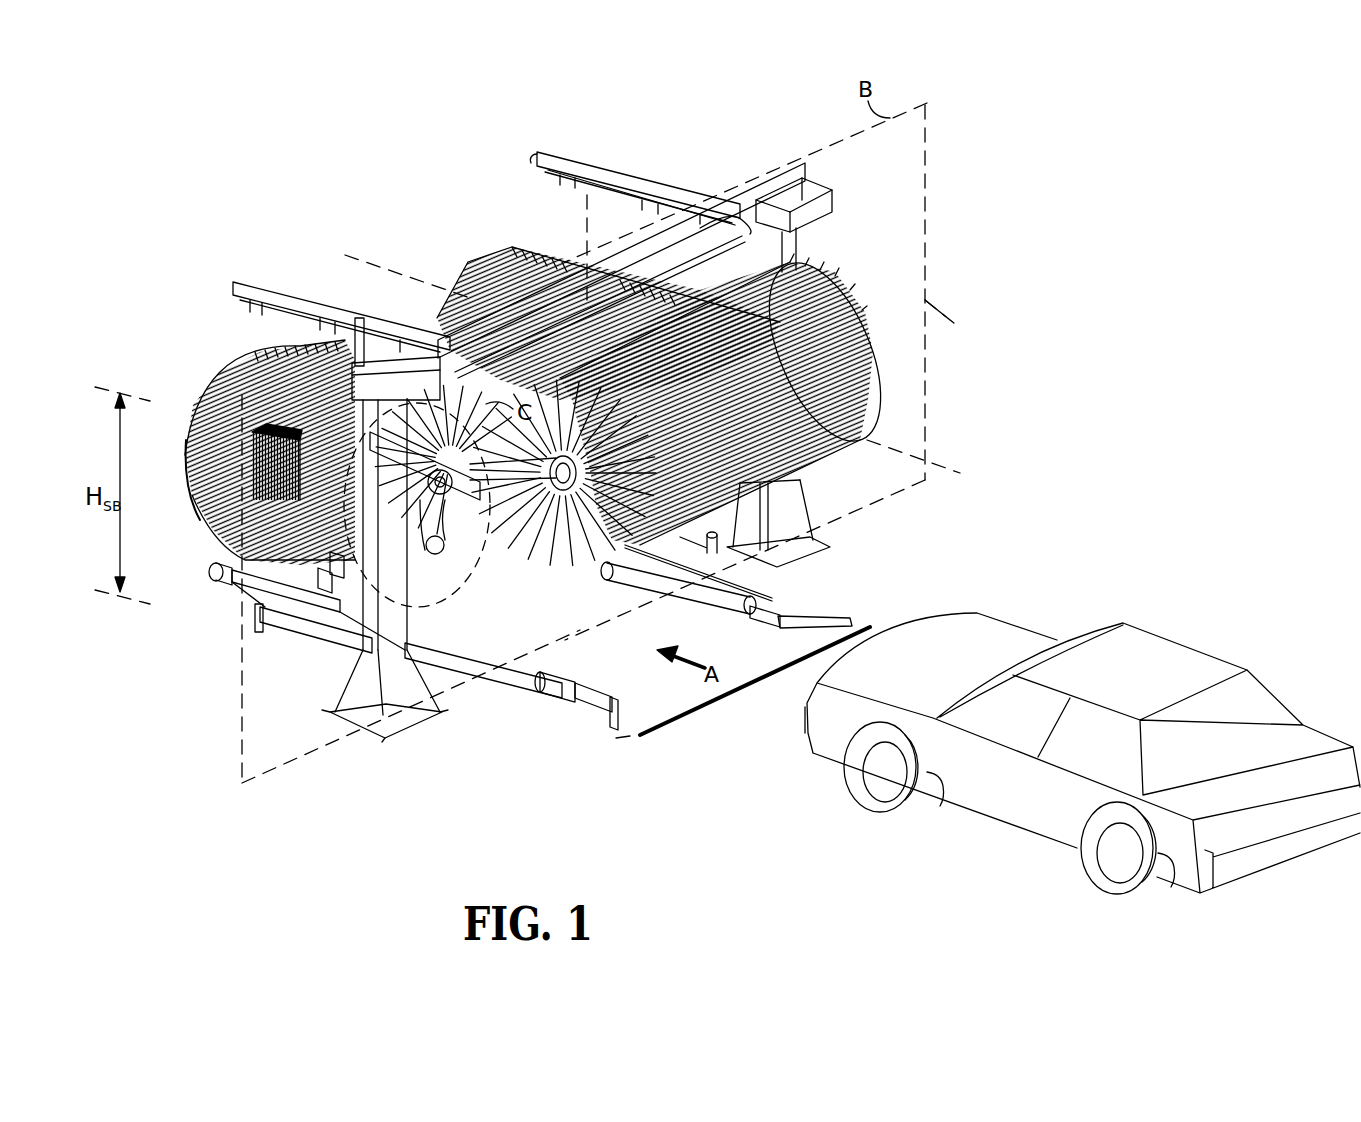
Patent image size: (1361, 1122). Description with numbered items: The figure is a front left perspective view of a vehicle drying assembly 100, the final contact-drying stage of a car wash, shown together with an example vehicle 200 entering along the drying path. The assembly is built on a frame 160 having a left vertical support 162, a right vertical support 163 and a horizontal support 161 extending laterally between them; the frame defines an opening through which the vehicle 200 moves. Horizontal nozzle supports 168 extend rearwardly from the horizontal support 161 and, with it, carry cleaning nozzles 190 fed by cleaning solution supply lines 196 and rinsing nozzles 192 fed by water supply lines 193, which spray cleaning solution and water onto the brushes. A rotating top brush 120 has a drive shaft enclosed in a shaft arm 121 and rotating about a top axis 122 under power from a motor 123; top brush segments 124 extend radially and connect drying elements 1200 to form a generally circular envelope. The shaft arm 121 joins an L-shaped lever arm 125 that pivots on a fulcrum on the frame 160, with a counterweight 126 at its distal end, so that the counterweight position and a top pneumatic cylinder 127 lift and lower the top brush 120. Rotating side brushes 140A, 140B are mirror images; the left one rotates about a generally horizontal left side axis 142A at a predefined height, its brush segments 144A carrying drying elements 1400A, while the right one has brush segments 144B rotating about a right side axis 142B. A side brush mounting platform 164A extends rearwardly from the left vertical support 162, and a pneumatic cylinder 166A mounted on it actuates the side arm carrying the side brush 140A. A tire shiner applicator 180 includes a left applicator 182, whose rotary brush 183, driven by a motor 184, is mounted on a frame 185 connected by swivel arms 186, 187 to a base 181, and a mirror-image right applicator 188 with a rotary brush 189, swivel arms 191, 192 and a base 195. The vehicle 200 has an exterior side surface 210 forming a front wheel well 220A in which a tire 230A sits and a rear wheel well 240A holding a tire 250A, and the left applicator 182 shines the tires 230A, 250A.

The vehicle drying assembly 100 is at (232, 97).
The top brush 120 is at (858, 320).
The shaft arm 121 is at (560, 490).
The top axis 122 is at (938, 312).
The motor 123 is at (443, 513).
The top brush segments 124 is at (862, 418).
The lever arm 125 is at (432, 440).
The counterweight 126 is at (272, 470).
The top pneumatic cylinder 127 is at (443, 485).
The side brush 140A is at (225, 382).
The side brush 140B is at (470, 265).
The left side axis 142A is at (96, 384).
The right side axis 142B is at (395, 248).
The brush segments 144A is at (246, 358).
The brush segments 144B is at (506, 250).
The drying elements 1400A is at (452, 436).
The drying elements 1200 is at (566, 486).
The frame 160 is at (808, 190).
The horizontal support 161 is at (777, 198).
The left vertical support 162 is at (378, 695).
The right vertical support 163 is at (798, 252).
The side brush mounting platform 164A is at (330, 574).
The pneumatic cylinder 166A is at (335, 588).
The horizontal nozzle supports 168 is at (650, 196).
The tire shiner applicator 180 is at (726, 693).
The base 181 is at (338, 654).
The left applicator 182 is at (607, 722).
The rotary brush 183 is at (552, 661).
The motor 184 is at (214, 575).
The frame 185 is at (590, 704).
The swivel arm 186 is at (440, 668).
The swivel arm 187 is at (290, 613).
The right applicator 188 is at (850, 615).
The rotary brush 189 is at (668, 603).
The cleaning nozzles 190 is at (556, 168).
The swivel arm 191 is at (723, 567).
The rinsing nozzles 192 is at (600, 177).
The water supply lines 193 is at (737, 218).
The base 195 is at (705, 522).
The cleaning solution supply lines 196 is at (541, 157).
The vehicle 200 is at (1082, 783).
The exterior side surface 210 is at (1033, 818).
The wheel well 220A is at (940, 800).
The tire 230A is at (880, 802).
The rear sensor 240A is at (1172, 885).
The tire 250A is at (1112, 892).